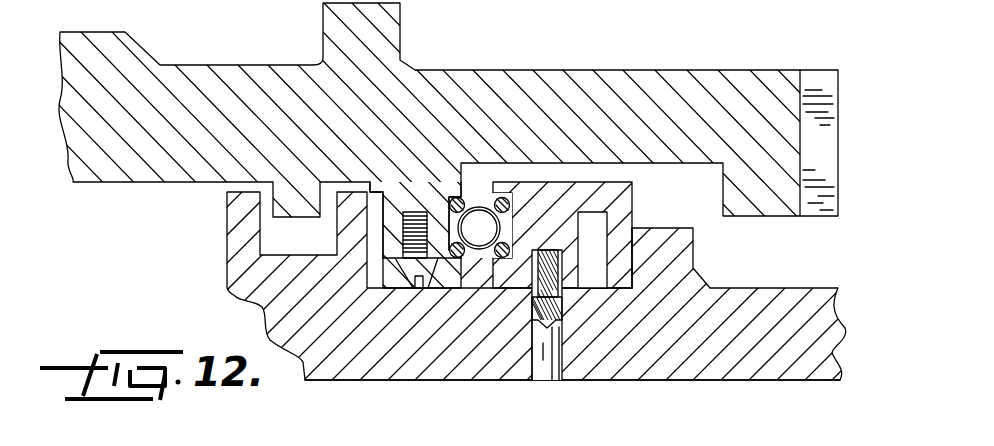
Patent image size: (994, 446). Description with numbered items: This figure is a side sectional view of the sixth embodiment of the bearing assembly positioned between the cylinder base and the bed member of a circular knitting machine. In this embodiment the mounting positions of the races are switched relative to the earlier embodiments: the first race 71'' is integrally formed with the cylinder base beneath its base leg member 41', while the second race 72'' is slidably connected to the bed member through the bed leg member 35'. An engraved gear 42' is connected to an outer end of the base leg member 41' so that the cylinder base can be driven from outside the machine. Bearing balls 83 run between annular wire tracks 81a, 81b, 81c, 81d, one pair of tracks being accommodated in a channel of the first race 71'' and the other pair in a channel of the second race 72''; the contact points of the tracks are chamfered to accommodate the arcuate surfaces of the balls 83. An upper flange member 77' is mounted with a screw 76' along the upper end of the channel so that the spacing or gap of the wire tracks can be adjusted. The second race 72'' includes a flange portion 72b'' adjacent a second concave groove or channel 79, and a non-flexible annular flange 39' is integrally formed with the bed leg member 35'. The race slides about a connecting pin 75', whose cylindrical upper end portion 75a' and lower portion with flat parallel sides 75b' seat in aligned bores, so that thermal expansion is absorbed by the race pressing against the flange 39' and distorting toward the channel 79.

The base leg member 41' is at (497, 223).
The engraved gear 42' is at (825, 120).
The first race 71'' is at (410, 223).
The screw 76' is at (380, 305).
The upper flange member 77' is at (406, 287).
The non-flexible annular flange 39' is at (497, 223).
The bed leg member 35' is at (572, 405).
The second race 72'' is at (577, 223).
The bearing block lower portion 72b'' is at (683, 286).
The second concave groove or channel 79 is at (590, 228).
The connecting pin 75' is at (569, 342).
The cylindrical upper end portion 75a' is at (499, 369).
The flat and parallel sides 75b' is at (589, 296).
The bearing balls 83 is at (491, 209).
The annular wire track 81a is at (451, 200).
The annular wire track 81b is at (456, 197).
The annular wire track 81c is at (508, 199).
The annular wire track 81d is at (477, 258).